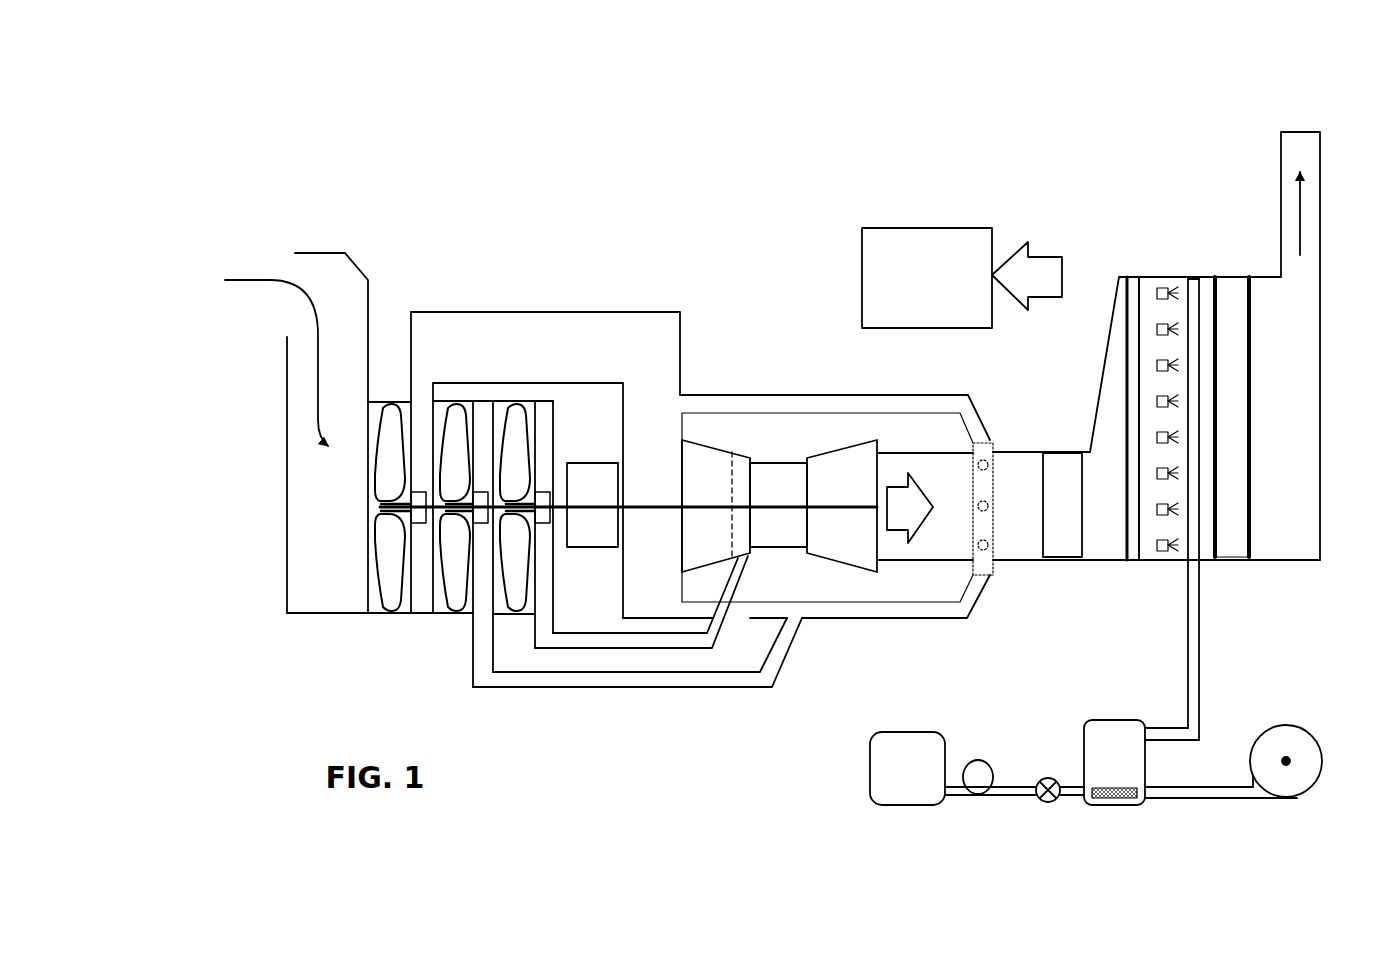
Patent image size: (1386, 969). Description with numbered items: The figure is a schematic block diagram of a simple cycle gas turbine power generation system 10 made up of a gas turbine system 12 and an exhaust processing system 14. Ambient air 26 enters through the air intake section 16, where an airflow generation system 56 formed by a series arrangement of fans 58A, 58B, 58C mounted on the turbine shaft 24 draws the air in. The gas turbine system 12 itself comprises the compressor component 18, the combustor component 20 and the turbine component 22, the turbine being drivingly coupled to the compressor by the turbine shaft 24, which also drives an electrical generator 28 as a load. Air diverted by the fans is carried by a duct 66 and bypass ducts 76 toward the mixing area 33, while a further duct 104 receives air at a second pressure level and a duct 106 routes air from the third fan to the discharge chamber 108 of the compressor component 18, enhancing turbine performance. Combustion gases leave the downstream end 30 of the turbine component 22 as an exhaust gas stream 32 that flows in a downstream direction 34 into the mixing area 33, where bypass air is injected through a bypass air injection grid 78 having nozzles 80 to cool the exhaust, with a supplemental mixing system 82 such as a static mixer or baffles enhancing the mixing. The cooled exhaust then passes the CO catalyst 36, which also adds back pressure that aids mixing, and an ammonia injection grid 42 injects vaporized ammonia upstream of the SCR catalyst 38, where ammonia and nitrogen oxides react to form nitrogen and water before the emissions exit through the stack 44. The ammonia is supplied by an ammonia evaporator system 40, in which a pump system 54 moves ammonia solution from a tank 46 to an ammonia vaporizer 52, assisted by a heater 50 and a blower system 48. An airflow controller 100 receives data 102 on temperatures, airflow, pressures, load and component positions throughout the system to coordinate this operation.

The gas turbine power generation system 10 is at (764, 145).
The gas turbine system 12 is at (790, 455).
The exhaust processing system 14 is at (1155, 180).
The air intake section 16 is at (262, 457).
The compressor component 18 is at (716, 506).
The combustor component 20 is at (778, 505).
The turbine component 22 is at (842, 506).
The turbine shaft 24 is at (838, 510).
The flow of air 26 is at (310, 292).
The electrical generator 28 is at (598, 549).
The downstream end 30 is at (882, 565).
The exhaust gas stream 32 is at (910, 508).
The mixing area 33 is at (1098, 506).
The downstream direction 34 is at (1072, 580).
The CO catalyst 36 is at (1125, 560).
The SCR catalyst 38 is at (1250, 487).
The ammonia evaporator system 40 is at (1035, 852).
The ammonia injection grid 42 is at (1157, 290).
The stack 44 is at (1301, 227).
The tank 46 is at (870, 778).
The blower system 48 is at (1298, 800).
The heater 50 is at (1120, 800).
The ammonia vaporizer 52 is at (1107, 722).
The pump system 54 is at (970, 762).
The airflow generation system 56 is at (393, 645).
The fan 58A is at (392, 403).
The fan 58B is at (457, 403).
The fan 58C is at (518, 403).
The duct 66 is at (411, 337).
The bypass duct 76 is at (727, 395).
The bypass air injection grid 78 is at (988, 445).
The nozzles 80 is at (988, 505).
The supplemental mixing system 82 is at (1062, 505).
The airflow controller 100 is at (927, 278).
The data 102 is at (1045, 252).
The duct 104 is at (545, 690).
The duct 106 is at (586, 650).
The discharge chamber 108 is at (745, 457).